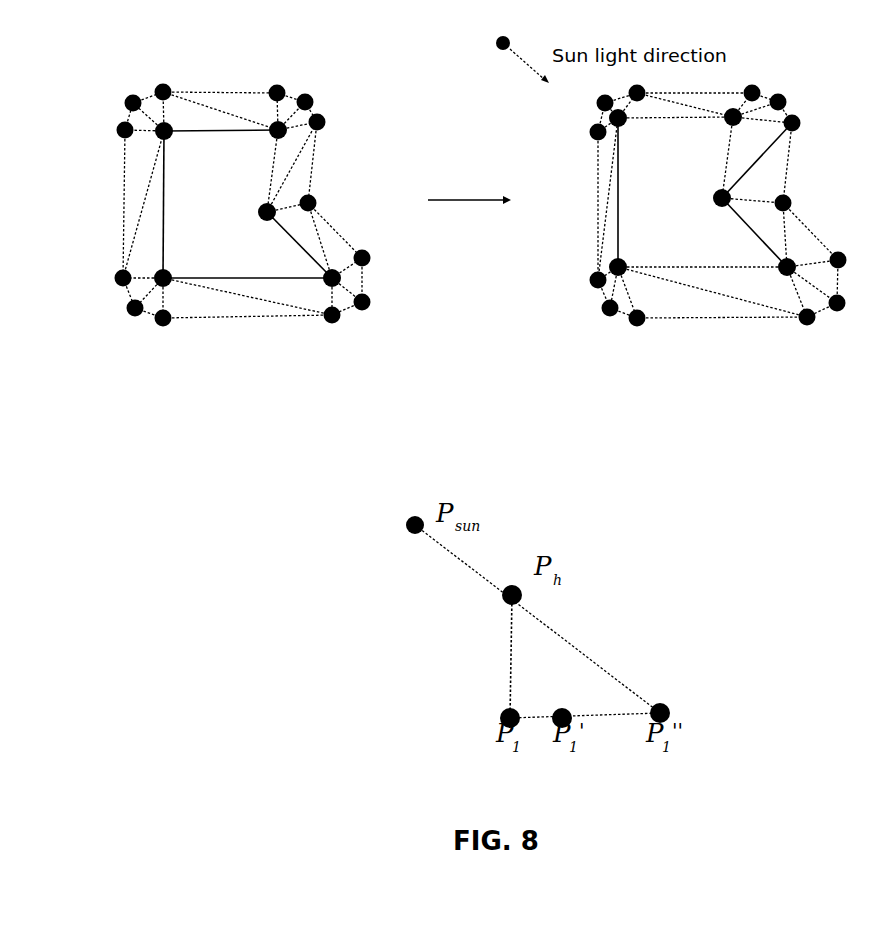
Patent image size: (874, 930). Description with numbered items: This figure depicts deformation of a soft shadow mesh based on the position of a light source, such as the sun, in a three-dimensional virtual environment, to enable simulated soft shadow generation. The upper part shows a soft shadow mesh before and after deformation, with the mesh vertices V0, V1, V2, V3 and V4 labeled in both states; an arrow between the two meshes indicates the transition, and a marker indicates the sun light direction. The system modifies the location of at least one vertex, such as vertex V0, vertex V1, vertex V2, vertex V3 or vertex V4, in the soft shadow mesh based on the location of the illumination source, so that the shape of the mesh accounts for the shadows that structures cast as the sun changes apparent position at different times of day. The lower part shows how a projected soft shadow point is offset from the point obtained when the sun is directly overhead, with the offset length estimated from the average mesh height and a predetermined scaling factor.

The mesh vertex V0 is at (177, 268).
The mesh vertex V1 is at (315, 268).
The mesh vertex V2 is at (254, 210).
The mesh vertex V3 is at (262, 142).
The mesh vertex V4 is at (177, 142).